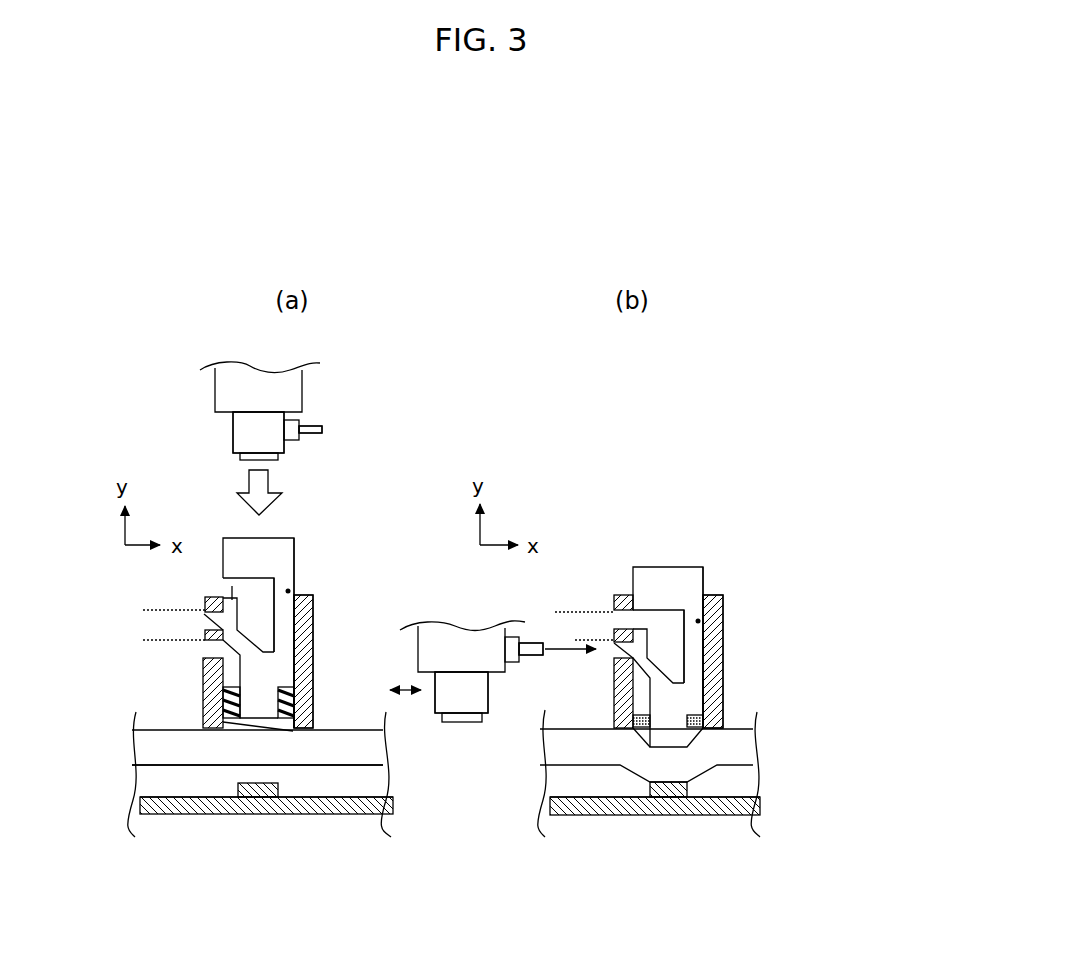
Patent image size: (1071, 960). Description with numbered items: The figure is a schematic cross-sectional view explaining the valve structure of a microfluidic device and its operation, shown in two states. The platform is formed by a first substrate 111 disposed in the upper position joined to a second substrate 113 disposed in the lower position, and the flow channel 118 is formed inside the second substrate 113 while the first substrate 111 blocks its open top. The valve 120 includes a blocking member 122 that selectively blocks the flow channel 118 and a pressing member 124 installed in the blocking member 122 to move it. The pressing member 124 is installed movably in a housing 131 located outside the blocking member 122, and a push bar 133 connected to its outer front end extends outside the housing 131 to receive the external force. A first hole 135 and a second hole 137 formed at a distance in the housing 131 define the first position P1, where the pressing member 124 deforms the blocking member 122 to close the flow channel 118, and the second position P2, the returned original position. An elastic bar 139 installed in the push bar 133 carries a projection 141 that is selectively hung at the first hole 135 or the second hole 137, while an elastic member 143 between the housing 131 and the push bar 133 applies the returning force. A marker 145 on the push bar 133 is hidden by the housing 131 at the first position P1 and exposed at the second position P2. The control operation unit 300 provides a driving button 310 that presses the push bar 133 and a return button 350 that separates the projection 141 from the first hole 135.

The first substrate 111 is at (124, 766).
The second substrate 113 is at (159, 818).
The flow channel 118 is at (203, 782).
The valve 120 is at (326, 615).
The blocking member 122 is at (260, 748).
The pressing member 124 is at (257, 705).
The housing 131 is at (313, 640).
The push bar 133 is at (277, 557).
The first hole 135 is at (210, 650).
The second hole 137 is at (205, 619).
The elastic bar 139 is at (232, 588).
The projection 141 is at (206, 606).
The elastic member 143 is at (223, 690).
The marker 145 is at (292, 589).
The control operation unit 300 is at (451, 614).
The driving button 310 is at (227, 467).
The return button 350 is at (314, 445).
The first position P1 is at (364, 640).
The second position P2 is at (364, 612).